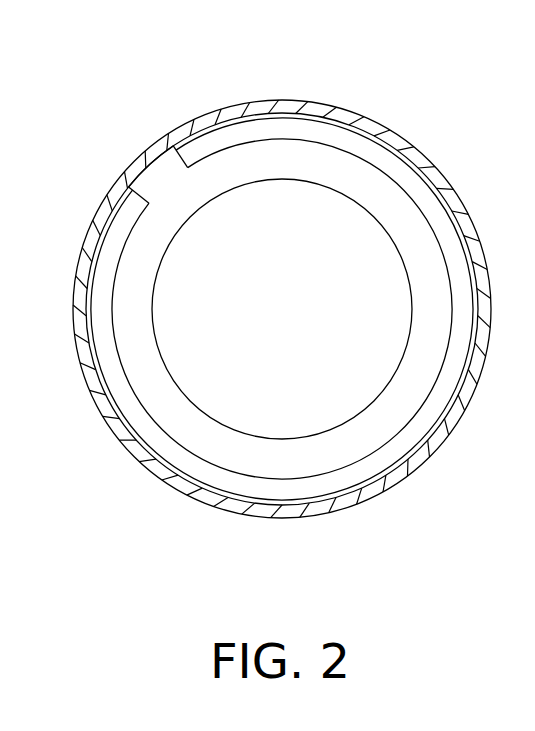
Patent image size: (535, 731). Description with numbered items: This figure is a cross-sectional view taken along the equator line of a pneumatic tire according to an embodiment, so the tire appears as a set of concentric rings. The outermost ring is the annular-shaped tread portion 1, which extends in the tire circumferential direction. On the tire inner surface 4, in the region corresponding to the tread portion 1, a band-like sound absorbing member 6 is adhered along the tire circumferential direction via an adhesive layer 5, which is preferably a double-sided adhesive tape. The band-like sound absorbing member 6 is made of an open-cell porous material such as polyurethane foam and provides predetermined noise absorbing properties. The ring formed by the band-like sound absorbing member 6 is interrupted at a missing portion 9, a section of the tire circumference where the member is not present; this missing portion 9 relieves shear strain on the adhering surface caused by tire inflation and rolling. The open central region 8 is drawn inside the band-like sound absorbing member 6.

The tread portion 1 is at (332, 102).
The tire inner surface 4 is at (140, 173).
The adhesive layer 5 is at (217, 122).
The band-like sound absorbing member 6 is at (283, 127).
The inner bore 8 is at (370, 187).
The missing portion 9 is at (158, 177).